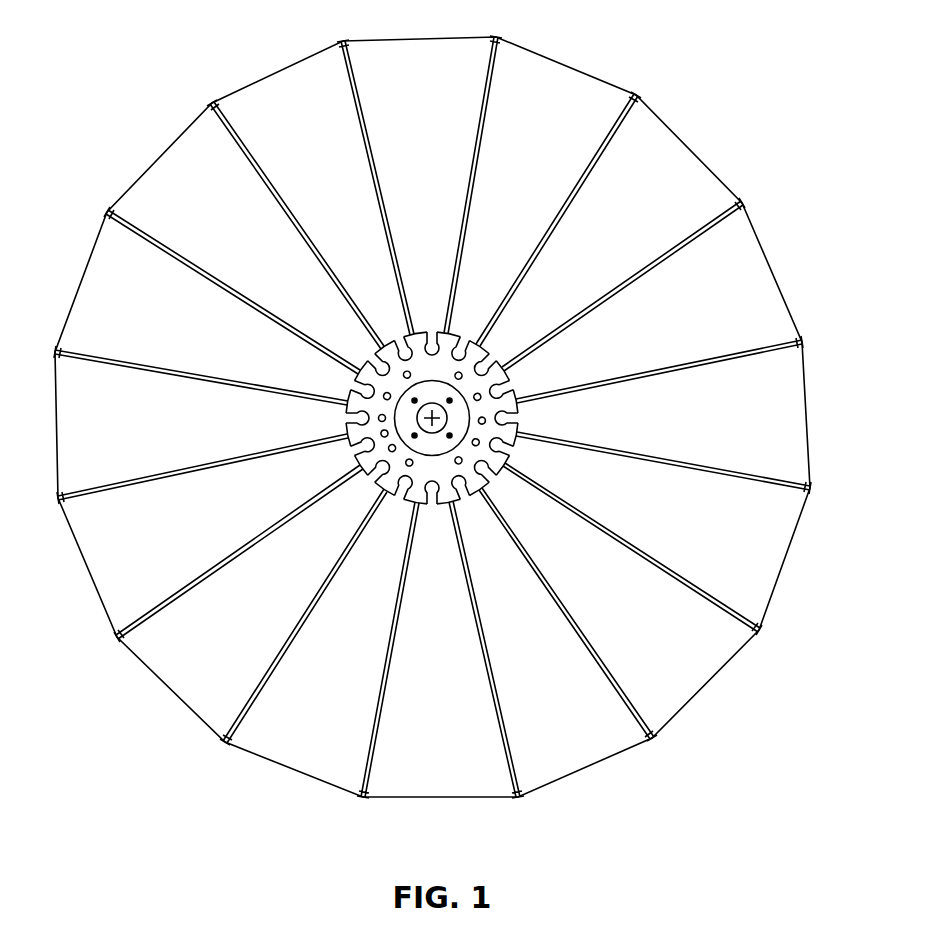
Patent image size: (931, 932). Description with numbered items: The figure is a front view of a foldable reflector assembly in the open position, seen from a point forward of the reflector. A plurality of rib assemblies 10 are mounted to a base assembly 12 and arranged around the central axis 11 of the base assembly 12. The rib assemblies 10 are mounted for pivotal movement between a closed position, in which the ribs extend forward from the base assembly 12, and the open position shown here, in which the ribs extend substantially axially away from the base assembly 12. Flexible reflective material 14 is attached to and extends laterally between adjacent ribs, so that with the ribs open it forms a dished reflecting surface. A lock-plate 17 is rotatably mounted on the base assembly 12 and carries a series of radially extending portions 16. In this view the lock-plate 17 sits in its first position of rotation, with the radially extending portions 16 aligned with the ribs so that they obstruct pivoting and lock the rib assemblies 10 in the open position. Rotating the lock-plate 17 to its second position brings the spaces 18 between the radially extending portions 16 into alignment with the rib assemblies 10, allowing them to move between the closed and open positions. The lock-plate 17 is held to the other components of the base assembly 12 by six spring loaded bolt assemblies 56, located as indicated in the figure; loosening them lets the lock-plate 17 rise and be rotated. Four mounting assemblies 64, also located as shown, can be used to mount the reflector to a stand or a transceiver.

The rib assembly 10 is at (497, 65).
The central axis 11 is at (437, 416).
The base assembly 12 is at (417, 390).
The flexible reflective material 14 is at (783, 568).
The radially extending portion 16 is at (453, 332).
The lock-plate 17 is at (428, 474).
The space 18 is at (349, 416).
The spring loaded bolt assembly 56 is at (378, 348).
The mounting assembly 64 is at (356, 362).